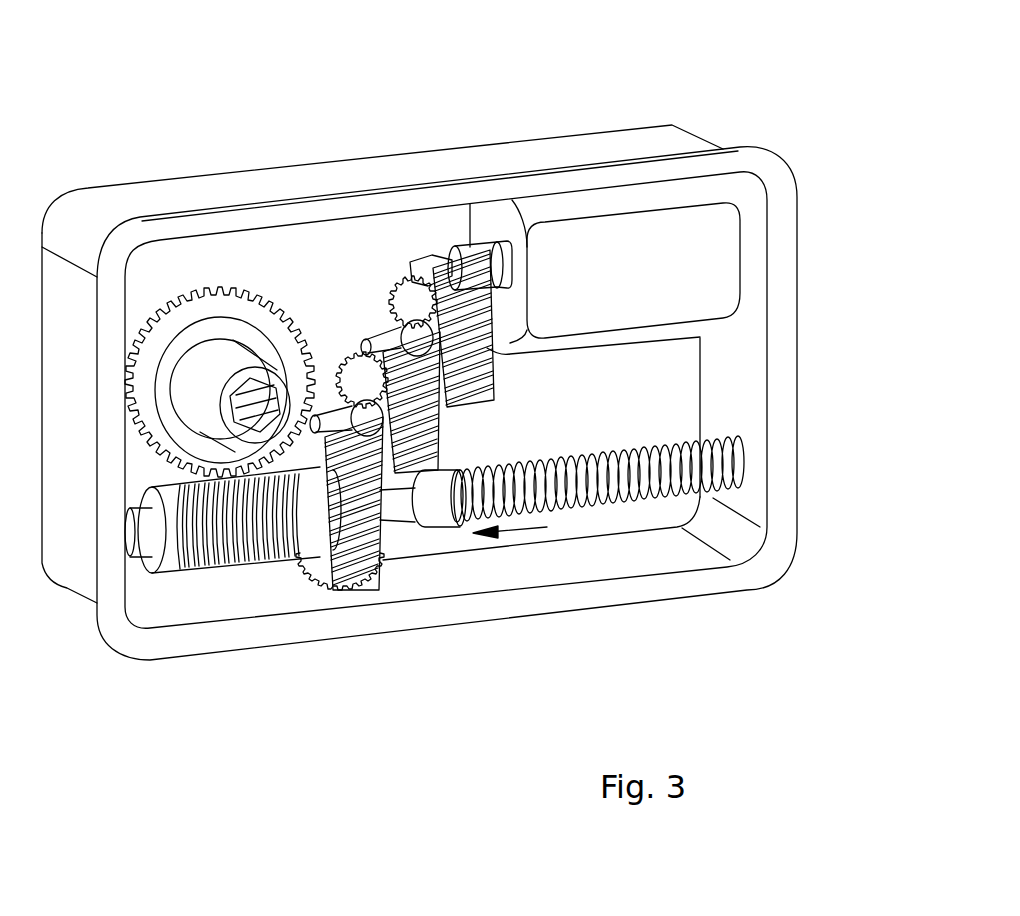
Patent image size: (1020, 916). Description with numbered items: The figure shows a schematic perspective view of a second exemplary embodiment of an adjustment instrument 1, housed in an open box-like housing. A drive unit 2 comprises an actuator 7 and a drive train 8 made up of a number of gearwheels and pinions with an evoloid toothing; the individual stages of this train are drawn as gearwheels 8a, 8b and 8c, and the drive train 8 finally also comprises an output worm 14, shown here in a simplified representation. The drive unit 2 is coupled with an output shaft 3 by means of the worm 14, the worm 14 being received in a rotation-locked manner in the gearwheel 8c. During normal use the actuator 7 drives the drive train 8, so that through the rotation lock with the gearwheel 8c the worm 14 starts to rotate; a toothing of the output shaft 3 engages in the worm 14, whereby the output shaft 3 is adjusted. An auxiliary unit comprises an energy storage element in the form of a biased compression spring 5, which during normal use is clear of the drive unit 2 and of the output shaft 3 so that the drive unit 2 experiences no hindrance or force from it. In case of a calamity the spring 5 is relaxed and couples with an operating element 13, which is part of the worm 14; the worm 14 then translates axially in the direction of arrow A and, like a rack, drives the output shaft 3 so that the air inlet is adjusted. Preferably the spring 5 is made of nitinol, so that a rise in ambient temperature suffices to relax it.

The adjustment instrument 1 is at (708, 95).
The drive unit 2 is at (418, 243).
The output shaft 3 is at (218, 362).
The energy storage element 5 is at (605, 510).
The actuator 7 is at (607, 282).
The drive train 8 is at (413, 395).
The first gear stage 8a is at (408, 303).
The second gear stage 8b is at (355, 380).
The gearwheel 8c is at (363, 537).
The operating element 13 is at (437, 513).
The output worm 14 is at (237, 567).
The direction of arrow A is at (525, 533).